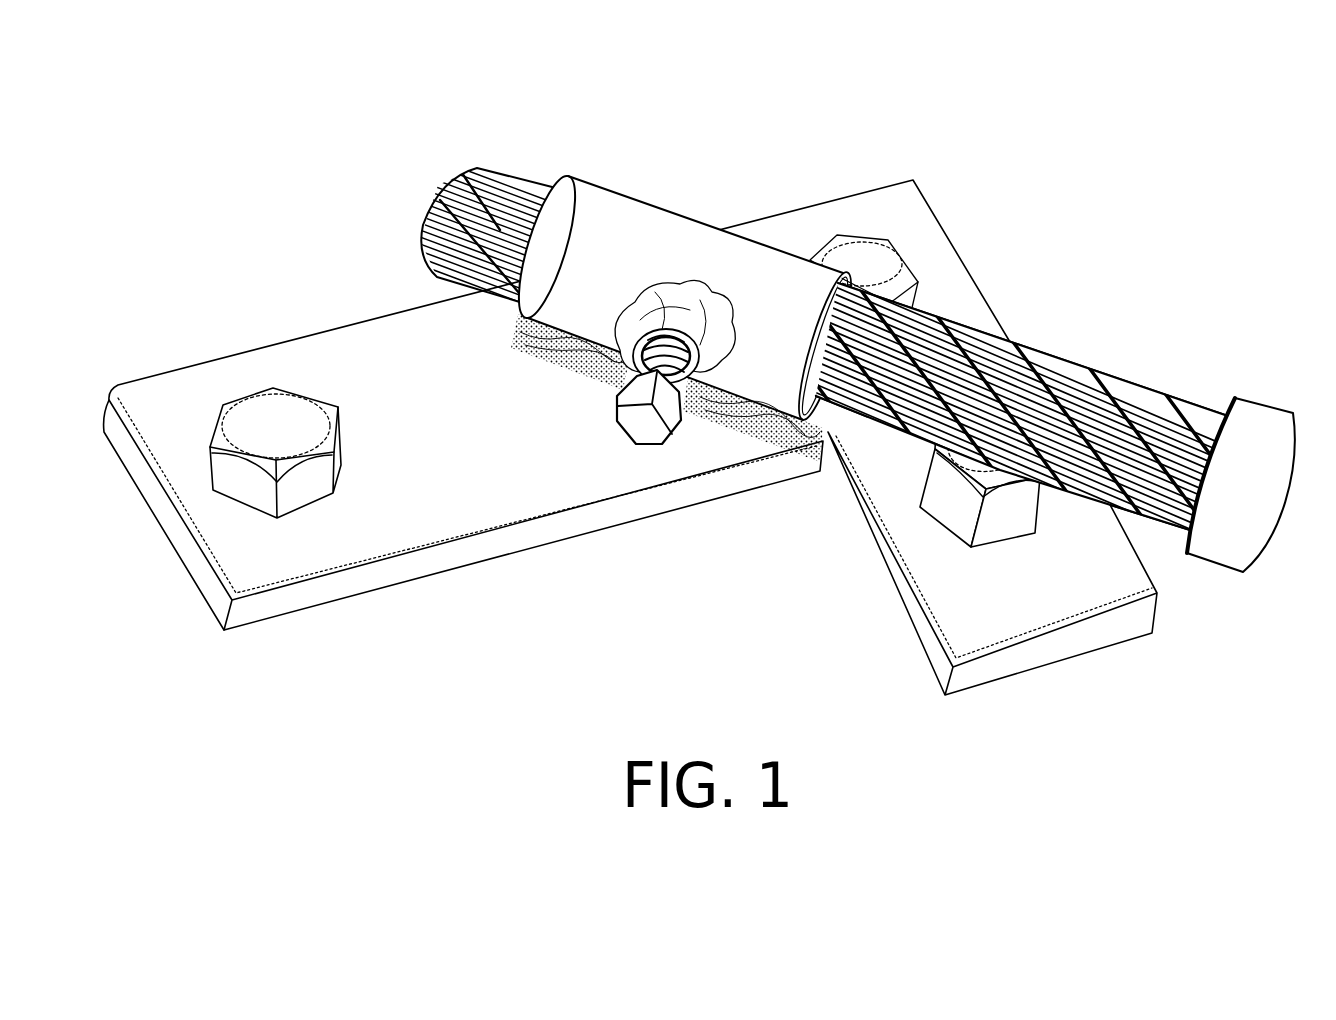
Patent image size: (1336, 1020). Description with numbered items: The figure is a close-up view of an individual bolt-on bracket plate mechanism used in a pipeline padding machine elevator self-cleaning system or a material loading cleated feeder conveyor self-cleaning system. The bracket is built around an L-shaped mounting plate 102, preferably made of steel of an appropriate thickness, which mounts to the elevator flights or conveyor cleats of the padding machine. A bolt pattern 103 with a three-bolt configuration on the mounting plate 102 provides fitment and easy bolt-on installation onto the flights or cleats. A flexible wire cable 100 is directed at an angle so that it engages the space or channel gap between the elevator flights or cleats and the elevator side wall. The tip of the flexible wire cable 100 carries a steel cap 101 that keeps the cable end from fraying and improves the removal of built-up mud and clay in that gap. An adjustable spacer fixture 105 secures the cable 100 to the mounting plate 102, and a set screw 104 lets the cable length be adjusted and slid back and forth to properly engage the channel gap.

The flexible wire cable 100 is at (1050, 373).
The steel cap 101 is at (1273, 447).
The L-shaped mounting plate 102 is at (1000, 600).
The bolt pattern 103 is at (957, 507).
The set screw 104 is at (651, 412).
The adjustable spacer fixture 105 is at (652, 243).